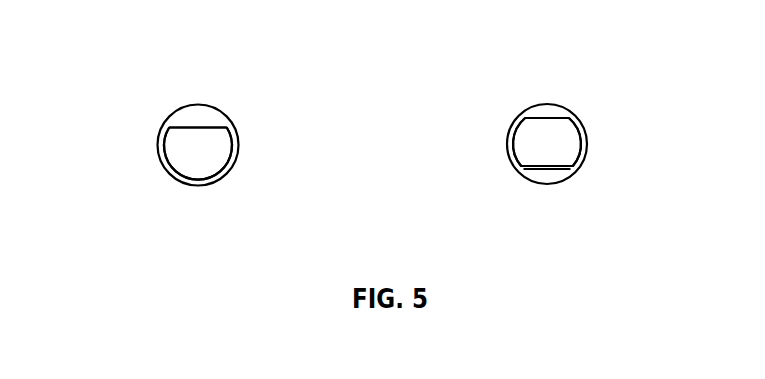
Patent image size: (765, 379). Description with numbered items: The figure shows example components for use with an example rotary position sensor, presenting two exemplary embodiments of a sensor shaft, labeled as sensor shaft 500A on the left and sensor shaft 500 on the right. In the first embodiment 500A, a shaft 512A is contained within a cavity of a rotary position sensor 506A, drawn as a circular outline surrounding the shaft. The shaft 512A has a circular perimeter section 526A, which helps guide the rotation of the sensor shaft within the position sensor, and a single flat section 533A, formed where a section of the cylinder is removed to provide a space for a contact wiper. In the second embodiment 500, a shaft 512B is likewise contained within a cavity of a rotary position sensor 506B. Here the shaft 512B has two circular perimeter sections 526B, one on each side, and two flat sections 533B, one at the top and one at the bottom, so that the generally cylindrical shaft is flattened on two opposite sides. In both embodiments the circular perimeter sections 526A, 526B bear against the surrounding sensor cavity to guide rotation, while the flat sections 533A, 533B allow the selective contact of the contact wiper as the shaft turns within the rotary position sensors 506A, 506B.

The sensor shaft embodiment 500 is at (550, 137).
The sensor shaft 500A is at (204, 137).
The rotary position sensor 506A is at (197, 107).
The rotary position sensor 506B is at (547, 105).
The shaft 512A is at (213, 153).
The shaft 512B is at (563, 148).
The circular perimeter section 526A is at (170, 165).
The circular perimeter sections 526B is at (583, 142).
The flat section 533A is at (180, 128).
The flat sections 533B is at (552, 118).